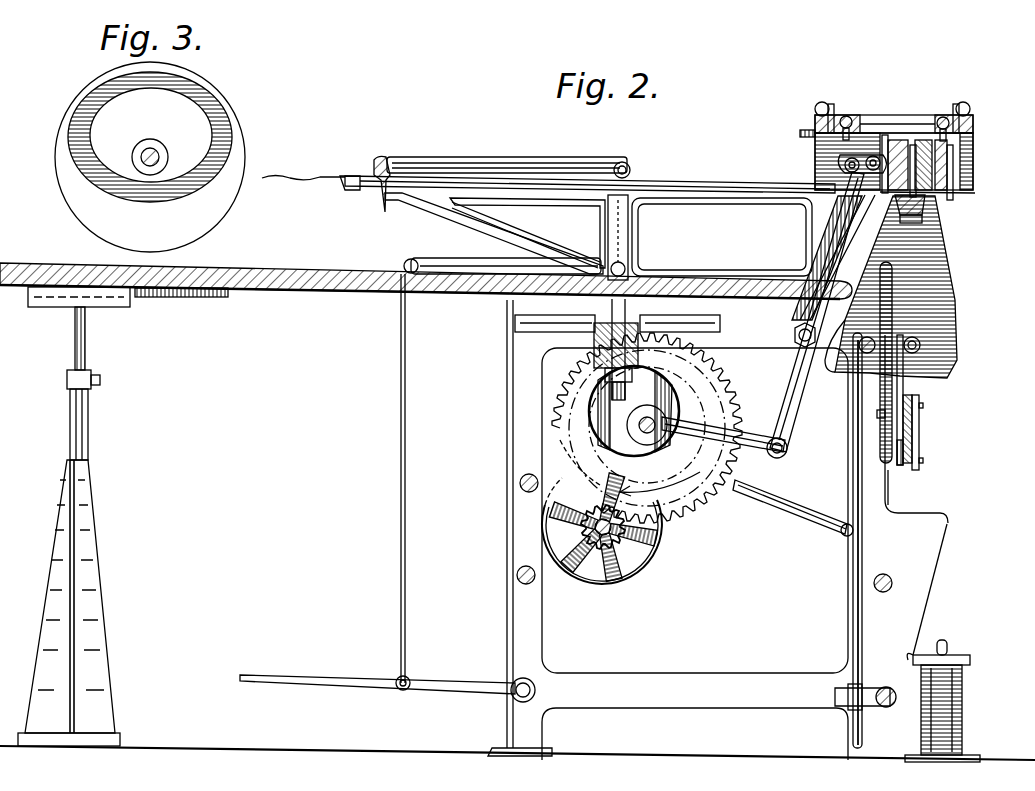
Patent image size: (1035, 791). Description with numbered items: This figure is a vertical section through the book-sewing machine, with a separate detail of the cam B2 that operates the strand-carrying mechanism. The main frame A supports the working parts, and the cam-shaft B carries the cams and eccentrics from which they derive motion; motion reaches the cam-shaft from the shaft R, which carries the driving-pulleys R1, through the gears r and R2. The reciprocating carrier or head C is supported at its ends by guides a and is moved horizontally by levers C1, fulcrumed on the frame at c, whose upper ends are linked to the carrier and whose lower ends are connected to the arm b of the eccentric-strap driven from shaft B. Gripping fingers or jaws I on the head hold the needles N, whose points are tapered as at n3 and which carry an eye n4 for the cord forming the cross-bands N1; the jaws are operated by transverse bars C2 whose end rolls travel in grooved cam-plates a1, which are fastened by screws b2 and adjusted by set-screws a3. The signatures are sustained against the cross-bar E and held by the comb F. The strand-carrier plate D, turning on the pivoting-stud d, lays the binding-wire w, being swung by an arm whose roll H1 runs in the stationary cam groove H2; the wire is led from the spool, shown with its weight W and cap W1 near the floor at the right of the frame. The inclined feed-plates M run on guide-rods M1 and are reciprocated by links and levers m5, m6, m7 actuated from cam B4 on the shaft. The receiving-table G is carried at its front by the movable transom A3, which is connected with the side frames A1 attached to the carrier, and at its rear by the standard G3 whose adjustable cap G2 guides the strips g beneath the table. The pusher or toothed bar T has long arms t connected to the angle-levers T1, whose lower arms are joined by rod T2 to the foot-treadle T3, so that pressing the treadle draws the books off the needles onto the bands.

In FIG. 3, the cam-shaft B is at (160, 157).
In FIG. 2, the cam-shaft B is at (647, 423).
In FIG. 3, the cam B2 is at (150, 150).
In FIG. 2, the cam B2 is at (625, 411).
In FIG. 2, the receiving-table G is at (426, 275).
In FIG. 2, the vertically-adjustable cap G2 is at (79, 373).
In FIG. 2, the guide-strips g is at (181, 302).
In FIG. 2, the standard G3 is at (69, 603).
In FIG. 2, the long arms t is at (507, 156).
In FIG. 2, the pusher or toothed bar T is at (379, 175).
In FIG. 2, the angle-levers T1 is at (631, 170).
In FIG. 2, the rod T2 is at (493, 460).
In FIG. 2, the foot-treadle T3 is at (387, 677).
In FIG. 2, the needles N is at (695, 183).
In FIG. 2, the cross-bands N1 is at (303, 166).
In FIG. 2, the eye n4 is at (338, 186).
In FIG. 2, the needle point taper n3 is at (962, 193).
In FIG. 2, the guides a is at (842, 171).
In FIG. 2, the cam-plates a1 is at (973, 155).
In FIG. 2, the set-screws a3 is at (899, 108).
In FIG. 2, the screws or bolts b2 is at (897, 118).
In FIG. 2, the transverse bars C2 is at (905, 130).
In FIG. 2, the gripping fingers or jaws I is at (945, 180).
In FIG. 2, the cross-bar or supporting-bed E is at (922, 212).
In FIG. 2, the comb or indented plate F is at (925, 225).
In FIG. 2, the frame A is at (727, 477).
In FIG. 2, the side frames A1 is at (598, 236).
In FIG. 2, the movable transom A3 is at (645, 315).
In FIG. 2, the reciprocating carrier or head C is at (616, 349).
In FIG. 2, the levers C1 is at (815, 315).
In FIG. 2, the fulcrum c is at (796, 335).
In FIG. 2, the cam B4 is at (742, 406).
In FIG. 2, the arm of the eccentric-strap b is at (723, 434).
In FIG. 2, the shaft R is at (603, 527).
In FIG. 2, the driving-pulleys R1 is at (650, 563).
In FIG. 2, the gear R2 is at (647, 428).
In FIG. 2, the gear r is at (590, 530).
In FIG. 2, the feed-plates M is at (893, 290).
In FIG. 2, the guide-rods M1 is at (920, 345).
In FIG. 2, the link or lever m5 is at (852, 440).
In FIG. 2, the link or lever m6 is at (845, 666).
In FIG. 2, the link or lever m7 is at (793, 508).
In FIG. 2, the roll H1 is at (922, 452).
In FIG. 2, the curved groove or cam H2 is at (912, 400).
In FIG. 2, the strand-carrier plate D is at (908, 429).
In FIG. 2, the pivoting-stud d is at (876, 411).
In FIG. 2, the binding-wire w is at (932, 589).
In FIG. 2, the weight W is at (942, 713).
In FIG. 2, the weight cap W1 is at (951, 654).